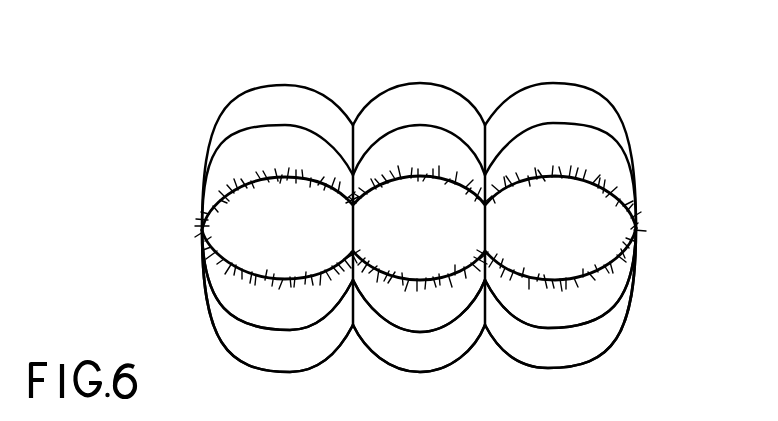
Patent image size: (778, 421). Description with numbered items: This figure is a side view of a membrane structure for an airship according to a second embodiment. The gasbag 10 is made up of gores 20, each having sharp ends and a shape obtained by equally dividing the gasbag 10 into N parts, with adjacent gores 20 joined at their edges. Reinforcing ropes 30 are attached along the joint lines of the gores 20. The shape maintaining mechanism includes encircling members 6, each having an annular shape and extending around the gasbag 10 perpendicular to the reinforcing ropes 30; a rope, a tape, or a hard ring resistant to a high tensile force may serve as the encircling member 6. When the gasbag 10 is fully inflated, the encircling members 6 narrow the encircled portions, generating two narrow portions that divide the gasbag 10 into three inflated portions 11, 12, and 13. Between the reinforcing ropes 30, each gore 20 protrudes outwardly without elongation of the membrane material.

The gasbag 10 is at (356, 64).
The inflated portion 11 is at (290, 83).
The inflated portion 12 is at (430, 82).
The inflated portion 13 is at (571, 82).
The gore 20 is at (273, 355).
The reinforcing rope 30 is at (235, 188).
The encircling member 6 is at (358, 312).